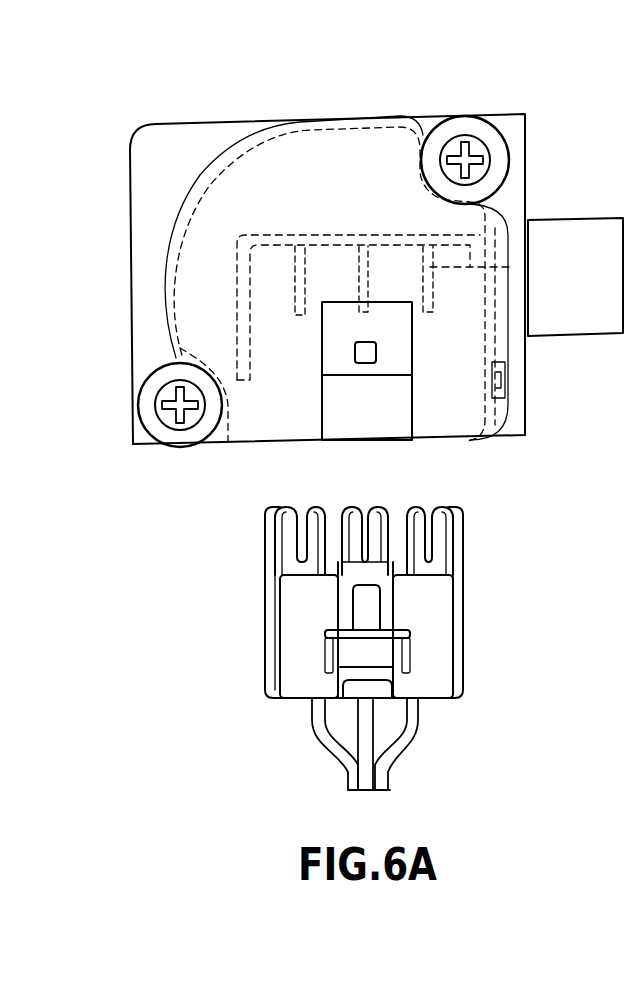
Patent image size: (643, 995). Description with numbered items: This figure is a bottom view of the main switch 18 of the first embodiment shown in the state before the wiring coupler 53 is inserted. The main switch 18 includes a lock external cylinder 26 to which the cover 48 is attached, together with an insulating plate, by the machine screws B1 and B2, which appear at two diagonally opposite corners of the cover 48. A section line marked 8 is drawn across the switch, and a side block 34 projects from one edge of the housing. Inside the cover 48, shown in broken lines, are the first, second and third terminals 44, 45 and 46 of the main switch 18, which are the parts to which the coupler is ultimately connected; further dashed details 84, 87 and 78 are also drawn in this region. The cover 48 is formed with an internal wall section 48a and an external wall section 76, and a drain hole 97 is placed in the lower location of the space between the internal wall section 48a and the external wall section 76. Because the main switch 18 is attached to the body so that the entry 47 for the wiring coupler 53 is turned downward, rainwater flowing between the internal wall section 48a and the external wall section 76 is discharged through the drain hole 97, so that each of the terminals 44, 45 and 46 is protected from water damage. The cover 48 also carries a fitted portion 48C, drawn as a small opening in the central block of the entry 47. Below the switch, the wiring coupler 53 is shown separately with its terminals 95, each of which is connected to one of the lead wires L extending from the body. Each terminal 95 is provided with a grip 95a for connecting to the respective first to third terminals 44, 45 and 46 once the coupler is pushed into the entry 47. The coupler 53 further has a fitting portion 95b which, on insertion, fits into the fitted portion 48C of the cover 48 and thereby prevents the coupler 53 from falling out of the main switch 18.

The main switch 18 is at (340, 112).
The lock external cylinder 26 is at (128, 200).
The cover 48 is at (157, 287).
The section line 8 is at (527, 113).
The machine screw B2 is at (465, 140).
The machine screw B1 is at (180, 420).
The side block 34 is at (583, 219).
The terminal 87 is at (292, 290).
The third terminal 46 is at (300, 250).
The second terminal 45 is at (363, 250).
The terminal pin 84 is at (378, 285).
The partition wall 78 is at (512, 267).
The first terminal 44 is at (433, 299).
The external wall section 76 is at (485, 342).
The internal wall section 48a is at (483, 363).
The drain hole 97 is at (507, 388).
The entry 47 is at (362, 444).
The fitted portion 48C is at (366, 368).
The wiring coupler 53 is at (262, 627).
The terminal 95 is at (280, 518).
The grip 95a is at (300, 512).
The fitting portion 95b is at (393, 613).
The lead wire L is at (370, 725).